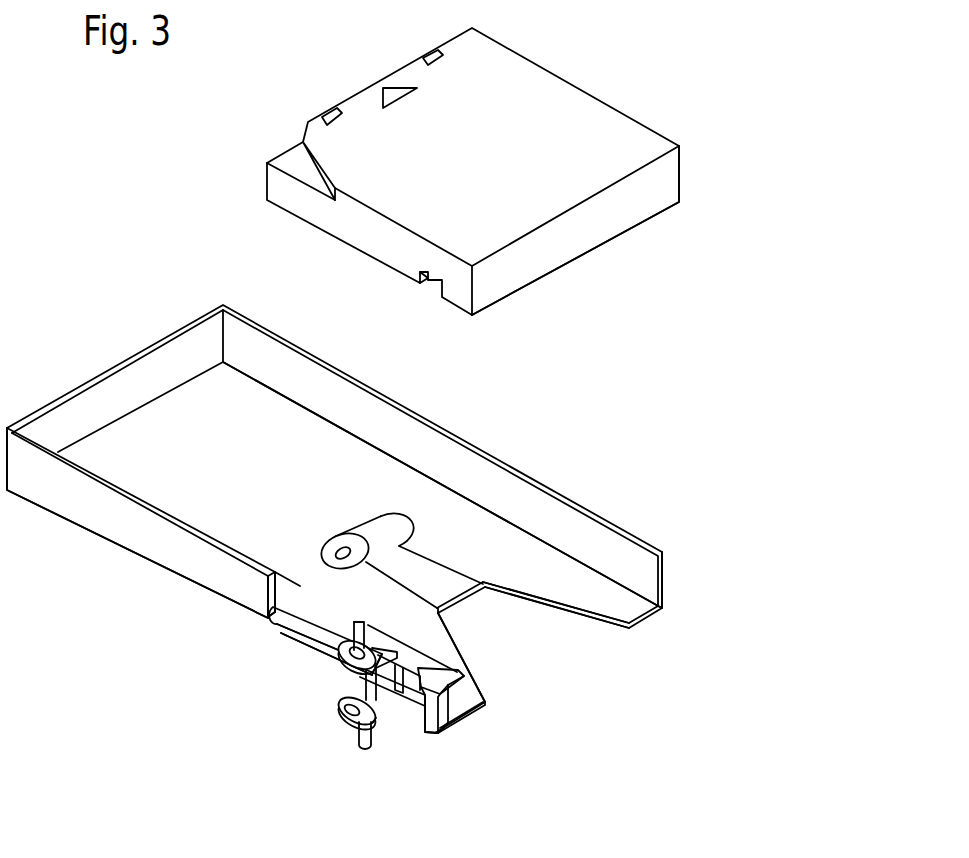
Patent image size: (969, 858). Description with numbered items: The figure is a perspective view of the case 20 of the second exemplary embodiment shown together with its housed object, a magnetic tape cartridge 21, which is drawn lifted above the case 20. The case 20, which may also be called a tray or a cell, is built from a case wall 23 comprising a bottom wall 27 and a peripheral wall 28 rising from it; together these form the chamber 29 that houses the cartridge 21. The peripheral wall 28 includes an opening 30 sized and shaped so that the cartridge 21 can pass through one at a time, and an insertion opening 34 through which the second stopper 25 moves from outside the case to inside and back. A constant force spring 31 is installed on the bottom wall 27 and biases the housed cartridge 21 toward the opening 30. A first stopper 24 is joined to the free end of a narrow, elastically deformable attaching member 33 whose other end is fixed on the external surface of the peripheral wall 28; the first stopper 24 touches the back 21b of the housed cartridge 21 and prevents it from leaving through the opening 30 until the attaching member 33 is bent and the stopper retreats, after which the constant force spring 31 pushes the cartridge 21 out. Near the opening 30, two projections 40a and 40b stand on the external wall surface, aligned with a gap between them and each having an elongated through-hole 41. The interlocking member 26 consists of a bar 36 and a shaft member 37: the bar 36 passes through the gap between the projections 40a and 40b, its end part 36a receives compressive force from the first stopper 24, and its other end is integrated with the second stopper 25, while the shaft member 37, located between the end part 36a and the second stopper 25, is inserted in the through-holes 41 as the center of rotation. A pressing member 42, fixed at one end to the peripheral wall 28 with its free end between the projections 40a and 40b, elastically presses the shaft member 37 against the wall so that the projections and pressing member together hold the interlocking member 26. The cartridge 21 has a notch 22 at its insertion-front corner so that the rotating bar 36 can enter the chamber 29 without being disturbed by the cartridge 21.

The case 20 is at (160, 287).
The magnetic tape cartridge 21 is at (565, 93).
The back of the cartridge 21b is at (573, 238).
The notch 22 is at (296, 163).
The case wall 23 is at (720, 557).
The first stopper 24 is at (457, 722).
The second stopper 25 is at (270, 612).
The interlocking member 26 is at (200, 727).
The bottom wall 27 is at (635, 608).
The peripheral wall 28 is at (112, 526).
The chamber 29 is at (443, 511).
The opening 30 is at (525, 628).
The constant force spring 31 is at (363, 536).
The attaching member 33 is at (408, 705).
The insertion opening 34 is at (296, 592).
The bar 36 is at (298, 627).
The end part of the bar 36a is at (462, 702).
The shaft member 37 is at (360, 744).
The projection 40a is at (375, 648).
The projection 40b is at (340, 707).
The through-hole 41 is at (355, 645).
The pressing member 42 is at (322, 663).